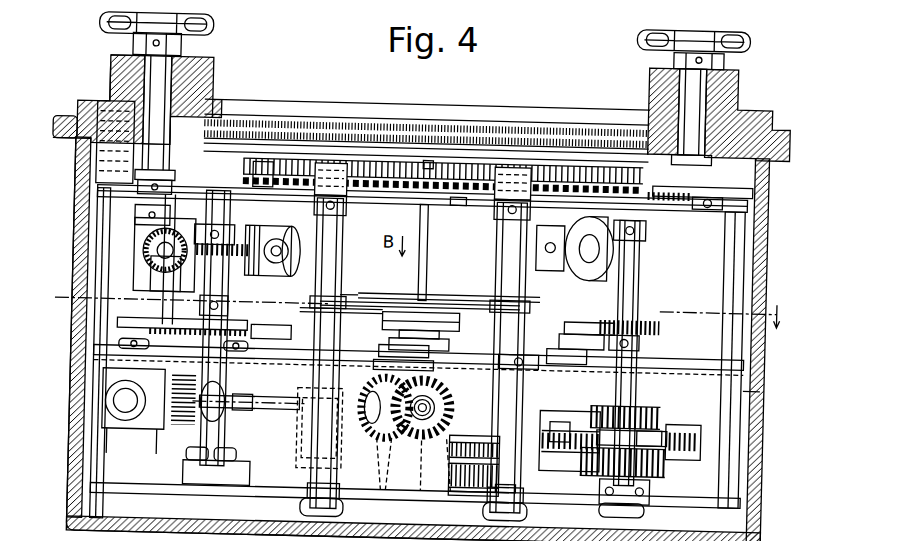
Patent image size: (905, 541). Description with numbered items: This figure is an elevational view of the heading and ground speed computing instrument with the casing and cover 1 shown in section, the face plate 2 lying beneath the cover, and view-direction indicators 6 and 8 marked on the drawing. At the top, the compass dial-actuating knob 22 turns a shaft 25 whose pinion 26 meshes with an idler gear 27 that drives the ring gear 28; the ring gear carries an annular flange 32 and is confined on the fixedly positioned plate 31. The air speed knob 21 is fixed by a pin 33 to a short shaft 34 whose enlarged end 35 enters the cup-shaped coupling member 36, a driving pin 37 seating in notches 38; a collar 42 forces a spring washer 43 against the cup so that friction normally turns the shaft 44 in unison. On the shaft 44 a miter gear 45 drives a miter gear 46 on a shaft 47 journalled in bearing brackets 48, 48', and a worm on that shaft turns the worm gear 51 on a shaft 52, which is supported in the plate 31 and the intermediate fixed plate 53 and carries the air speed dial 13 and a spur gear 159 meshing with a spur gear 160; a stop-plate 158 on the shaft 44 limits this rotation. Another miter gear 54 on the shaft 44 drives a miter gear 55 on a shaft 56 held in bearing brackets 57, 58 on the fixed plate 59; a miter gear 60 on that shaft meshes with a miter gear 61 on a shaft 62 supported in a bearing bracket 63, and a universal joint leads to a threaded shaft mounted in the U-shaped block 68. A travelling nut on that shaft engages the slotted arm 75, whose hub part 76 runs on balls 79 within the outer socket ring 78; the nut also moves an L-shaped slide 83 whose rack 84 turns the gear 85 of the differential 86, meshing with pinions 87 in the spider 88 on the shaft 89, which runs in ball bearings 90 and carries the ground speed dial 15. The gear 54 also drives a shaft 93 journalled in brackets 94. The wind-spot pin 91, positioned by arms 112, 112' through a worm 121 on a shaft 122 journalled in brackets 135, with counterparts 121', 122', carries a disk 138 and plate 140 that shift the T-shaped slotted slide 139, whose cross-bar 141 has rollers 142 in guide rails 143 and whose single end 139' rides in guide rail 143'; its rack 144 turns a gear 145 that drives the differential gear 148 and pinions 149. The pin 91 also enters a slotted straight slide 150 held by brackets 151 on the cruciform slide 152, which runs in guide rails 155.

The cover 1 is at (330, 107).
The face plate 2 is at (452, 164).
The section line 6 is at (418, 308).
The rack tooth 8 is at (421, 164).
The air speed dial 13 is at (81, 160).
The ground speed dial 15 is at (762, 171).
The air speed knob 21 is at (106, 27).
The compass dial-actuating knob 22 is at (746, 33).
The shaft 25 is at (720, 64).
The pinion 26 is at (698, 198).
The idler gear 27 is at (656, 199).
The ring gear 28 is at (456, 198).
The fixedly positioned plate 31 is at (704, 193).
The annular flange 32 is at (262, 168).
The pin 33 is at (140, 50).
The short shaft 34 is at (163, 50).
The enlarged end 35 is at (193, 100).
The cup-shaped coupling member 36 is at (71, 121).
The driving pin 37 is at (108, 82).
The notches 38 is at (104, 97).
The collar 42 is at (77, 200).
The spring washer 43 is at (97, 178).
The shaft 44 is at (150, 296).
The miter gear 45 is at (138, 225).
The miter gear 46 is at (139, 246).
The shaft 47 is at (149, 266).
The bearing bracket 48 is at (109, 272).
The bearing bracket 48' is at (202, 261).
The worm gear 51 is at (217, 276).
The shaft 52 is at (225, 304).
The intermediate fixed plate 53 is at (96, 349).
The miter gear 54 is at (96, 367).
The miter gear 55 is at (178, 428).
The shaft 56 is at (251, 424).
The bearing bracket 57 is at (222, 460).
The bearing bracket 58 is at (258, 440).
The fixed plate 59 is at (150, 491).
The miter gear 60 is at (253, 424).
The miter gear 61 is at (400, 490).
The shaft 62 is at (423, 490).
The bearing bracket 63 is at (455, 490).
The U-shaped block 68 is at (463, 410).
The slotted arm 75 is at (463, 438).
The annular hub part 76 is at (514, 443).
The outer socket ring 78 is at (535, 482).
The balls 79 is at (499, 468).
The L-shaped slide 83 is at (548, 417).
The rack 84 is at (570, 427).
The gear 85 is at (658, 404).
The differential 86 is at (699, 406).
The pinions 87 is at (708, 430).
The spider 88 is at (694, 461).
The shaft 89 is at (631, 257).
The ball bearings 90 is at (613, 226).
The wind-spot pin 91 is at (424, 255).
The shaft 93 is at (137, 408).
The brackets 94 is at (126, 437).
The arm 112 is at (449, 284).
The arm 112' is at (357, 283).
The worm 121 is at (273, 267).
The hub 121' is at (578, 273).
The shaft 122 is at (279, 251).
The drum 122' is at (576, 257).
The brackets 135 is at (336, 229).
The disk 138 is at (414, 310).
The slotted slide 139 is at (403, 331).
The single end 139' is at (324, 313).
The plate 140 is at (439, 324).
The cross-bar 141 is at (620, 296).
The rollers 142 is at (581, 326).
The guide rails 143 is at (570, 350).
The guide rail 143' is at (273, 331).
The rack 144 is at (624, 305).
The gear 145 is at (661, 321).
The gear 148 is at (685, 463).
The pinions 149 is at (658, 446).
The slotted straight slide 150 is at (395, 350).
The brackets 151 is at (386, 368).
The cruciform slide 152 is at (511, 363).
The guide rails 155 is at (764, 390).
The stop-plate 158 is at (135, 328).
The spur gear 159 is at (251, 348).
The spur gear 160 is at (131, 350).